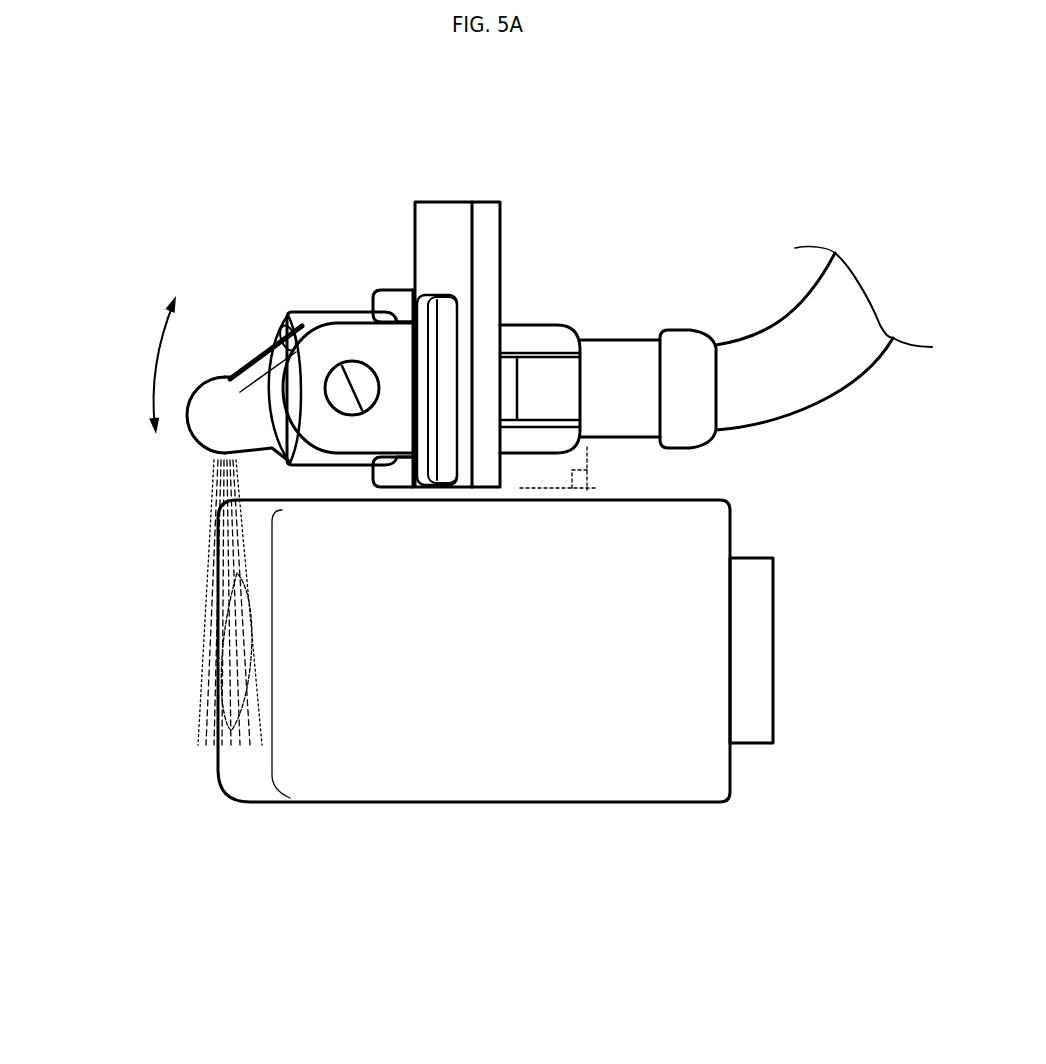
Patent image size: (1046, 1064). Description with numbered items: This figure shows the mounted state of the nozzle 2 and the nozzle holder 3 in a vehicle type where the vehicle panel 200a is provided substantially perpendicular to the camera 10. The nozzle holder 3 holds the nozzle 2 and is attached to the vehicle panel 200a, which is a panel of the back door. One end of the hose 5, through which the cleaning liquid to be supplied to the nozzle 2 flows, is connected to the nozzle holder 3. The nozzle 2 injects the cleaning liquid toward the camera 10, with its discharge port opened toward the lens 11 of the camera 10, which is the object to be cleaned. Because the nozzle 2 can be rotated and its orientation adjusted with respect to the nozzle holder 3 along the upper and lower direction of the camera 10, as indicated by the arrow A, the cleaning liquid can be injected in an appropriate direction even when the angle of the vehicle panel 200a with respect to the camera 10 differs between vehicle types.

The vehicle panel 200a is at (440, 213).
The nozzle holder 3 is at (395, 290).
The nozzle 2 is at (206, 438).
The arrow A is at (153, 362).
The hose 5 is at (793, 333).
The camera 10 is at (487, 800).
The lens 11 is at (217, 653).